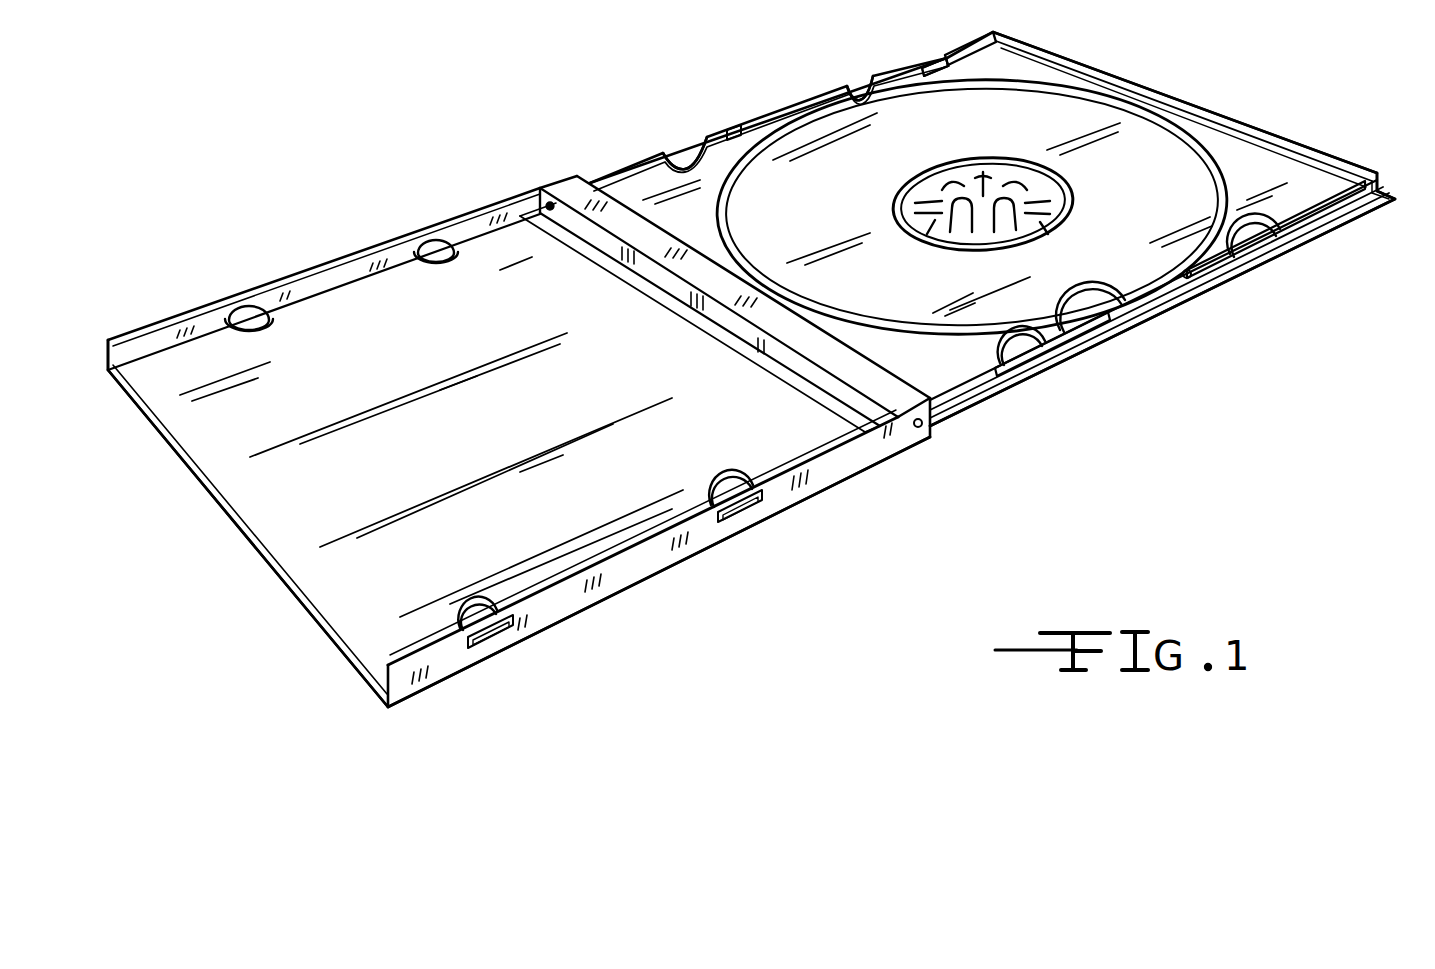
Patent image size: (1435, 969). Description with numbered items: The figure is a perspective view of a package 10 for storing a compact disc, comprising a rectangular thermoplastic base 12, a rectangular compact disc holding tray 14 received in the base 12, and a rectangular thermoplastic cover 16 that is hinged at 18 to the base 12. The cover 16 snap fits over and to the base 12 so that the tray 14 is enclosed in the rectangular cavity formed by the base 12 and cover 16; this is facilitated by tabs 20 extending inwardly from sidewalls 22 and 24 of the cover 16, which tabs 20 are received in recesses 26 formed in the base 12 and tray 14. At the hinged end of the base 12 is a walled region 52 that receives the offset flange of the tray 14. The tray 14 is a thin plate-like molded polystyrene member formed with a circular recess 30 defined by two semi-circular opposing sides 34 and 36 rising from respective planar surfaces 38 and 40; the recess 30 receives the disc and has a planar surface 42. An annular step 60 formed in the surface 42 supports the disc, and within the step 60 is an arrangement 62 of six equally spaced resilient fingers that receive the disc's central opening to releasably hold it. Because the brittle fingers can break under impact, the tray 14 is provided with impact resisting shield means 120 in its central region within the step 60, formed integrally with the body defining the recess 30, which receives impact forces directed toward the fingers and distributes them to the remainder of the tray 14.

The package 10 is at (555, 130).
The base 12 is at (1163, 320).
The compact disc holding tray 14 is at (733, 147).
The cover 16 is at (225, 522).
The hinge 18 is at (545, 182).
The tabs 20 is at (433, 263).
The sidewall 22 is at (573, 593).
The sidewall 24 is at (165, 313).
The recesses 26 is at (680, 153).
The circular recess 30 is at (1075, 132).
The semi-circular side 34 is at (1117, 317).
The semi-circular side 36 is at (1183, 137).
The planar surface 38 is at (963, 373).
The planar surface 40 is at (1291, 185).
The planar surface 42 is at (1160, 223).
The walled region 52 is at (548, 200).
The annular step 60 is at (1060, 173).
The arrangement of fingers 62 is at (1037, 222).
The impact resisting shield means 120 is at (1007, 130).